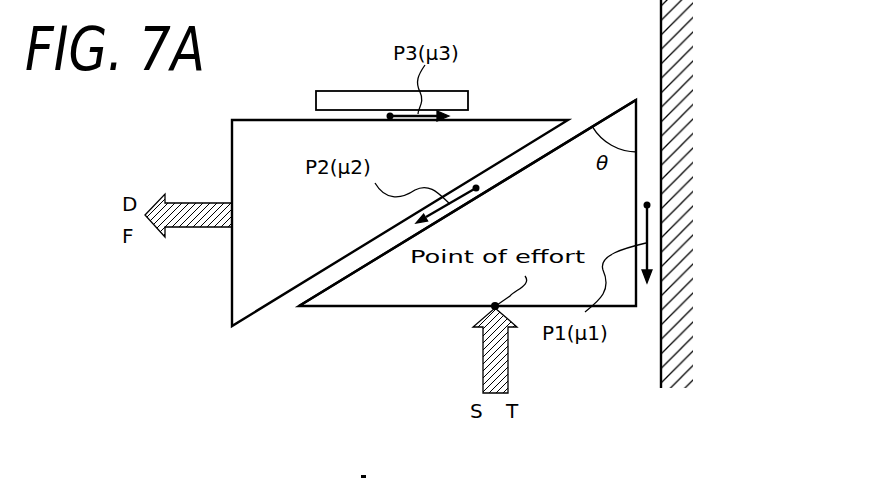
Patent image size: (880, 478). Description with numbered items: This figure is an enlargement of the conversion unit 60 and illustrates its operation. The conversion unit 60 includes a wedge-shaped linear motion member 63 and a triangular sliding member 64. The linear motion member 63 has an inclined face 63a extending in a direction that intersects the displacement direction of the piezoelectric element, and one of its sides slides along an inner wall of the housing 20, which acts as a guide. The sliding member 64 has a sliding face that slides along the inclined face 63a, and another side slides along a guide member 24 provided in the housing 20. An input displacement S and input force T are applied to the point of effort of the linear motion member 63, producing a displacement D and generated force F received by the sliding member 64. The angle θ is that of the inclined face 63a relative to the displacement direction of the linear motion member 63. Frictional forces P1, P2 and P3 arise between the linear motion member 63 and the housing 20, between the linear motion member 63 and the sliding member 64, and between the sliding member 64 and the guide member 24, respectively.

The housing 20 is at (681, 63).
The guide member 24 is at (368, 90).
The conversion unit 60 is at (274, 100).
The linear motion member 63 is at (402, 283).
The inclined face 63a is at (595, 133).
The sliding member 64 is at (247, 150).